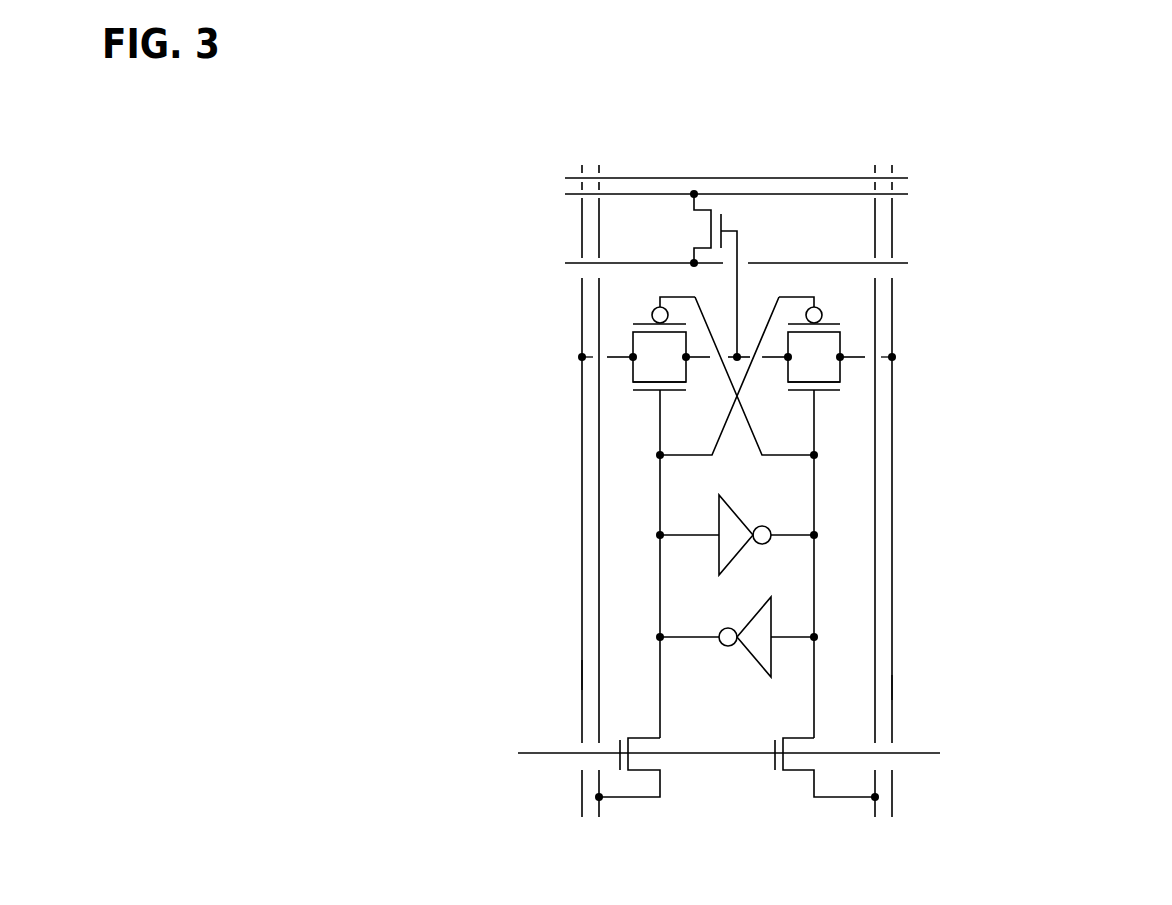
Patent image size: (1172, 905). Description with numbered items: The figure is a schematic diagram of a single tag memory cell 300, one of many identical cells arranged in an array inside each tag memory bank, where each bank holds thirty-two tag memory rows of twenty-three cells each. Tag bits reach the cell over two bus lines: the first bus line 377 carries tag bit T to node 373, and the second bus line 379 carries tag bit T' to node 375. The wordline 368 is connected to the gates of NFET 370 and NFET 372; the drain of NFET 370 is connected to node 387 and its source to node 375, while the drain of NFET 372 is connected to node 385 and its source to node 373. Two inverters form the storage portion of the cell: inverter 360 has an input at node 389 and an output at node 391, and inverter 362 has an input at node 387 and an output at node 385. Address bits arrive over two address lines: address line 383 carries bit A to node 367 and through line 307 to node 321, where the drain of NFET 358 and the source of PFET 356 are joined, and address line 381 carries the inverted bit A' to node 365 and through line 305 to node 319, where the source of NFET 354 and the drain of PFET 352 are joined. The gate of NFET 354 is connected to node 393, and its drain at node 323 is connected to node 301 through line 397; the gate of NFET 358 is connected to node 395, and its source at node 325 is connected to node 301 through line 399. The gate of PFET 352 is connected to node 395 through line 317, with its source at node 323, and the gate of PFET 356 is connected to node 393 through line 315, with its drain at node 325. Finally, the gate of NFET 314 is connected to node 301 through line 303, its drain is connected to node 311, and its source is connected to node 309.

The memory cell 300 is at (1070, 163).
The node 301 is at (746, 318).
The line 303 is at (737, 238).
The line 305 is at (613, 353).
The line 307 is at (866, 353).
The node 309 is at (690, 200).
The node 311 is at (694, 263).
The NFET 314 is at (703, 210).
The line 315 is at (716, 448).
The line 317 is at (758, 448).
The node 319 is at (632, 358).
The node 321 is at (841, 360).
The node 323 is at (688, 362).
The node 325 is at (787, 362).
The PFET 352 is at (633, 352).
The NFET 354 is at (635, 382).
The PFET 356 is at (841, 350).
The NFET 358 is at (841, 383).
The inverter 360 is at (719, 512).
The inverter 362 is at (771, 621).
The node 365 is at (582, 357).
The node 367 is at (892, 357).
The wordline 368 is at (560, 752).
The NFET 370 is at (803, 773).
The NFET 372 is at (628, 772).
The node 373 is at (600, 800).
The node 375 is at (874, 800).
The line 377 is at (599, 622).
The line 379 is at (875, 660).
The line 381 is at (582, 672).
The line 383 is at (892, 687).
The node 385 is at (660, 637).
The node 387 is at (814, 637).
The node 389 is at (660, 535).
The node 391 is at (814, 535).
The node 393 is at (660, 455).
The node 395 is at (814, 455).
The line 397 is at (711, 360).
The line 399 is at (762, 360).